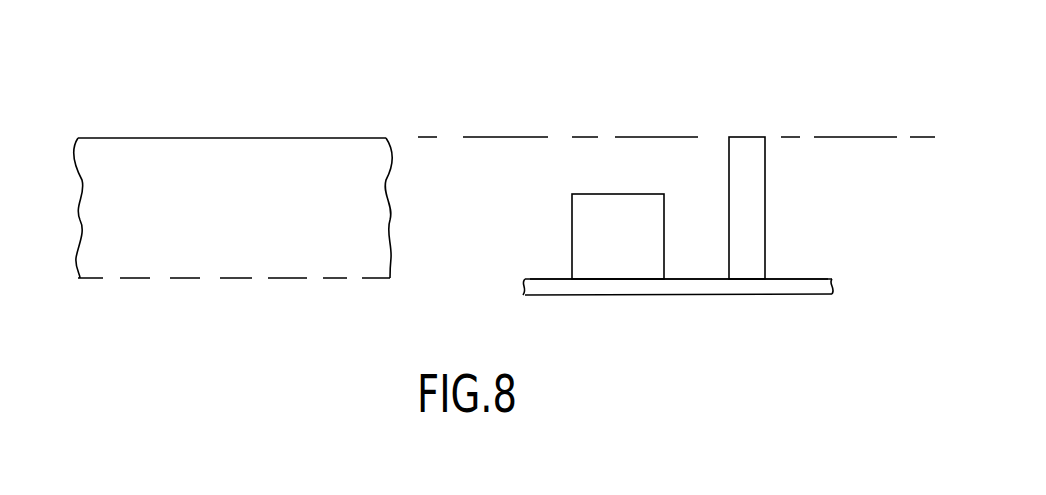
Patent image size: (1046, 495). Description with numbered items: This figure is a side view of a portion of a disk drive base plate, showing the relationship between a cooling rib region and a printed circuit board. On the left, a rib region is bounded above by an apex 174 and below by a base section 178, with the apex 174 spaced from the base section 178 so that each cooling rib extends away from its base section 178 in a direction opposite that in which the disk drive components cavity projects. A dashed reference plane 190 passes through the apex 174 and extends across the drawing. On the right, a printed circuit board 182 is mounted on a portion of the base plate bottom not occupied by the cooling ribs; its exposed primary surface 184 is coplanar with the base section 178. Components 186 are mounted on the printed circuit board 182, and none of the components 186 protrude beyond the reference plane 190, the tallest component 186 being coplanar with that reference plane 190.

The apex 174 is at (160, 138).
The base section 178 is at (235, 280).
The reference plane 190 is at (507, 137).
The component 186 is at (633, 250).
The exposed primary surface 184 is at (802, 279).
The printed circuit board 182 is at (817, 295).